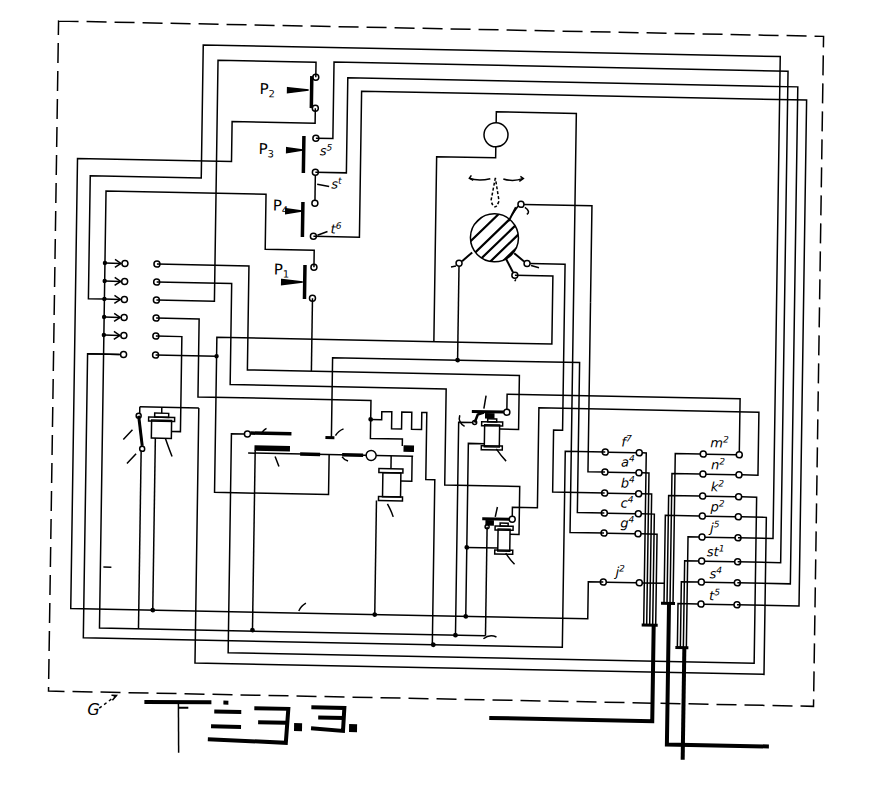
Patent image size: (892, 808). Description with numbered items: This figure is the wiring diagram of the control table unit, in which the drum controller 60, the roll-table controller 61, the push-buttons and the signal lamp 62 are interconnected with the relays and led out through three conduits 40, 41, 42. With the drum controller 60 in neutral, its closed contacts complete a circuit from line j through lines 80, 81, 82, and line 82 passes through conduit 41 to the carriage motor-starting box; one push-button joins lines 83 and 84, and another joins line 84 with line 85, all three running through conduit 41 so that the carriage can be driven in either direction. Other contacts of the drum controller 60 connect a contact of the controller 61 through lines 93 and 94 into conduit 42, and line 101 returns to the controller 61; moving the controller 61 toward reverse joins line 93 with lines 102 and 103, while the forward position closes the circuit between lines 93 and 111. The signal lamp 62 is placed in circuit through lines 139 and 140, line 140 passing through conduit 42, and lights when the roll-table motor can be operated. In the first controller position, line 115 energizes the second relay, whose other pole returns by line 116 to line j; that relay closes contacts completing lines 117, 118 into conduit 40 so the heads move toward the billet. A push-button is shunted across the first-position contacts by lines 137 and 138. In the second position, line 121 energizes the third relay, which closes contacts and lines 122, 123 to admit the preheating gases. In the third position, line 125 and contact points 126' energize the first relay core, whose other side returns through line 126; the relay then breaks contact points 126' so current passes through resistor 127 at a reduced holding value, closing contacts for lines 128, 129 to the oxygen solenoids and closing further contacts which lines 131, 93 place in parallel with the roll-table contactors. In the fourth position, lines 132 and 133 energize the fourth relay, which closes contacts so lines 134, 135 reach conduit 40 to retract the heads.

The conduit 40 is at (669, 738).
The conduit 41 is at (695, 722).
The conduit 42 is at (598, 722).
The drum controller 60 is at (135, 258).
The controller 61 is at (476, 222).
The signal lamp 62 is at (480, 126).
The line 80 is at (73, 420).
The line 81 is at (215, 231).
The line 82 is at (597, 50).
The line 83 is at (650, 64).
The line 84 is at (700, 80).
The line 85 is at (746, 93).
The line 93 is at (503, 346).
The line 94 is at (657, 448).
The line 101 is at (590, 254).
The line 102 is at (459, 307).
The line 103 is at (523, 362).
The line 111 is at (590, 300).
The line 115 is at (248, 326).
The line 116 is at (471, 584).
The line 117 is at (458, 571).
The line 118 is at (633, 393).
The line 121 is at (231, 304).
The line 122 is at (492, 605).
The line 123 is at (679, 407).
The line 125 is at (300, 403).
The line 126 is at (359, 558).
The contact points 126' is at (414, 496).
The resistor 127 is at (400, 412).
The line 128 is at (258, 577).
The line 129 is at (230, 532).
The line 131 is at (316, 496).
The line 132 is at (181, 398).
The line 133 is at (158, 572).
The line 134 is at (141, 538).
The line 135 is at (199, 520).
The line 137 is at (171, 204).
The line 138 is at (311, 316).
The line 139 is at (433, 286).
The line 140 is at (573, 151).